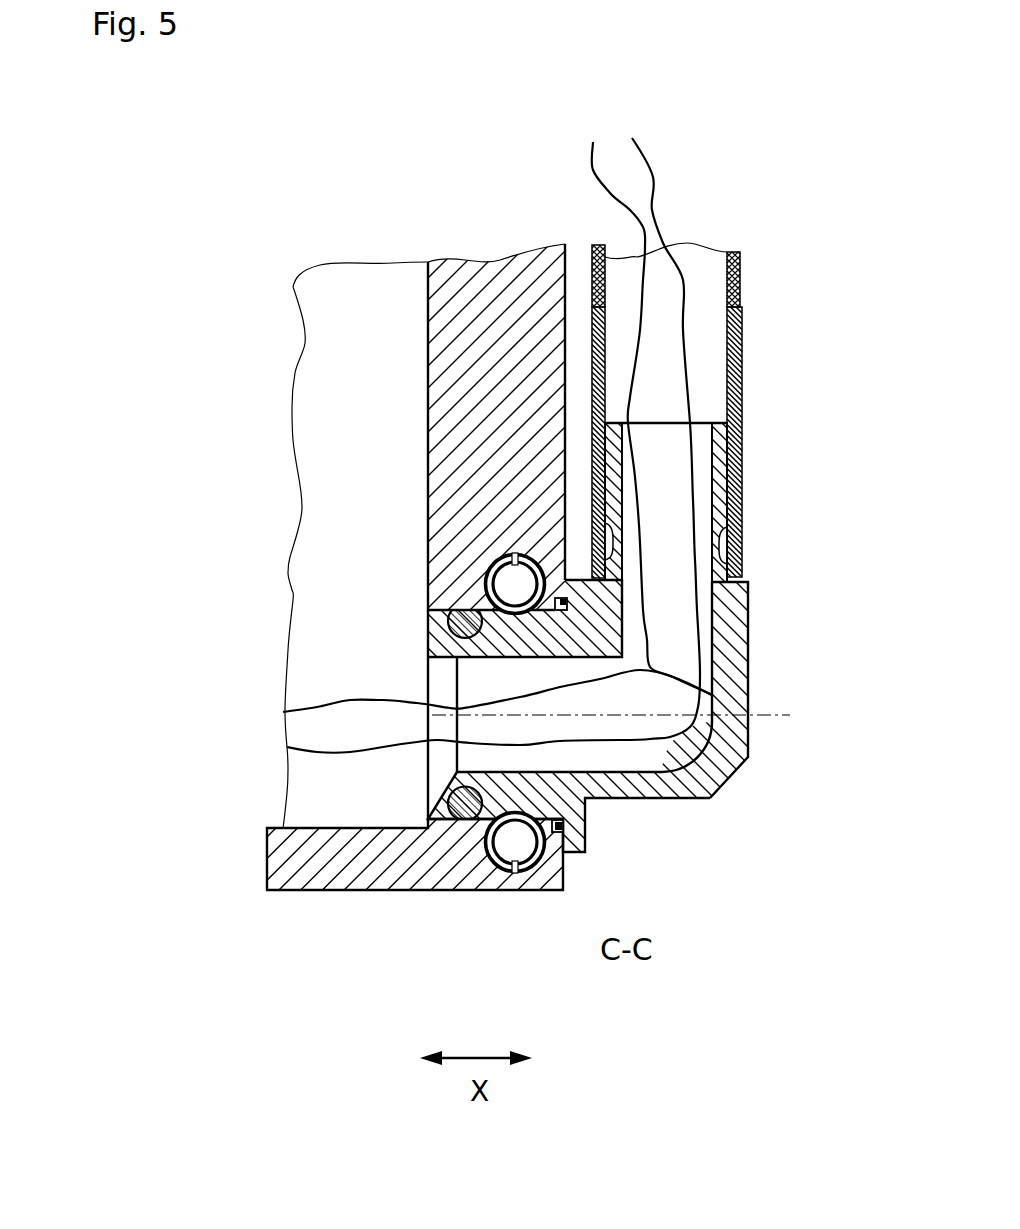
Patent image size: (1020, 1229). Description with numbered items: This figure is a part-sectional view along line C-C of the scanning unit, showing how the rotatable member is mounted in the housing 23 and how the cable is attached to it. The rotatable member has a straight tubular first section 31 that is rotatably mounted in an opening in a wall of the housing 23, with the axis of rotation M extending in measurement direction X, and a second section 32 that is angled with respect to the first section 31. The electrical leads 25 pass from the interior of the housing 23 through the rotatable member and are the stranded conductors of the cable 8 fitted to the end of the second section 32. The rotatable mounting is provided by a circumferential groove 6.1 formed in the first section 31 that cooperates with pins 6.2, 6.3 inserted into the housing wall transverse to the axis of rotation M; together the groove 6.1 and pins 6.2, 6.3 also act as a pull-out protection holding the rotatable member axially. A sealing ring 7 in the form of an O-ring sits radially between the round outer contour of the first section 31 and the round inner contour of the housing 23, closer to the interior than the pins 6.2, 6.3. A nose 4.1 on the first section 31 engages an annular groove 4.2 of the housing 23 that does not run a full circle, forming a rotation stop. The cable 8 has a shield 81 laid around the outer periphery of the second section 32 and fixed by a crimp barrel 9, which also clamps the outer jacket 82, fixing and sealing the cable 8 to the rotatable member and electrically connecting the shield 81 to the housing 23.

The housing 23 is at (458, 282).
The electrical leads 25 is at (499, 430).
The cable 8 is at (707, 273).
The outer jacket 82 is at (742, 279).
The crimp barrel 9 is at (743, 350).
The shield 81 is at (740, 442).
The nose 4.1 is at (560, 601).
The second section 32 is at (728, 650).
The first section 31 is at (687, 798).
The pin 6.3 is at (488, 578).
The circumferential groove 6.1 is at (503, 615).
The sealing ring 7 is at (447, 821).
The pin 6.2 is at (500, 872).
The annular groove 4.2 is at (557, 834).
The axis of rotation M is at (768, 715).